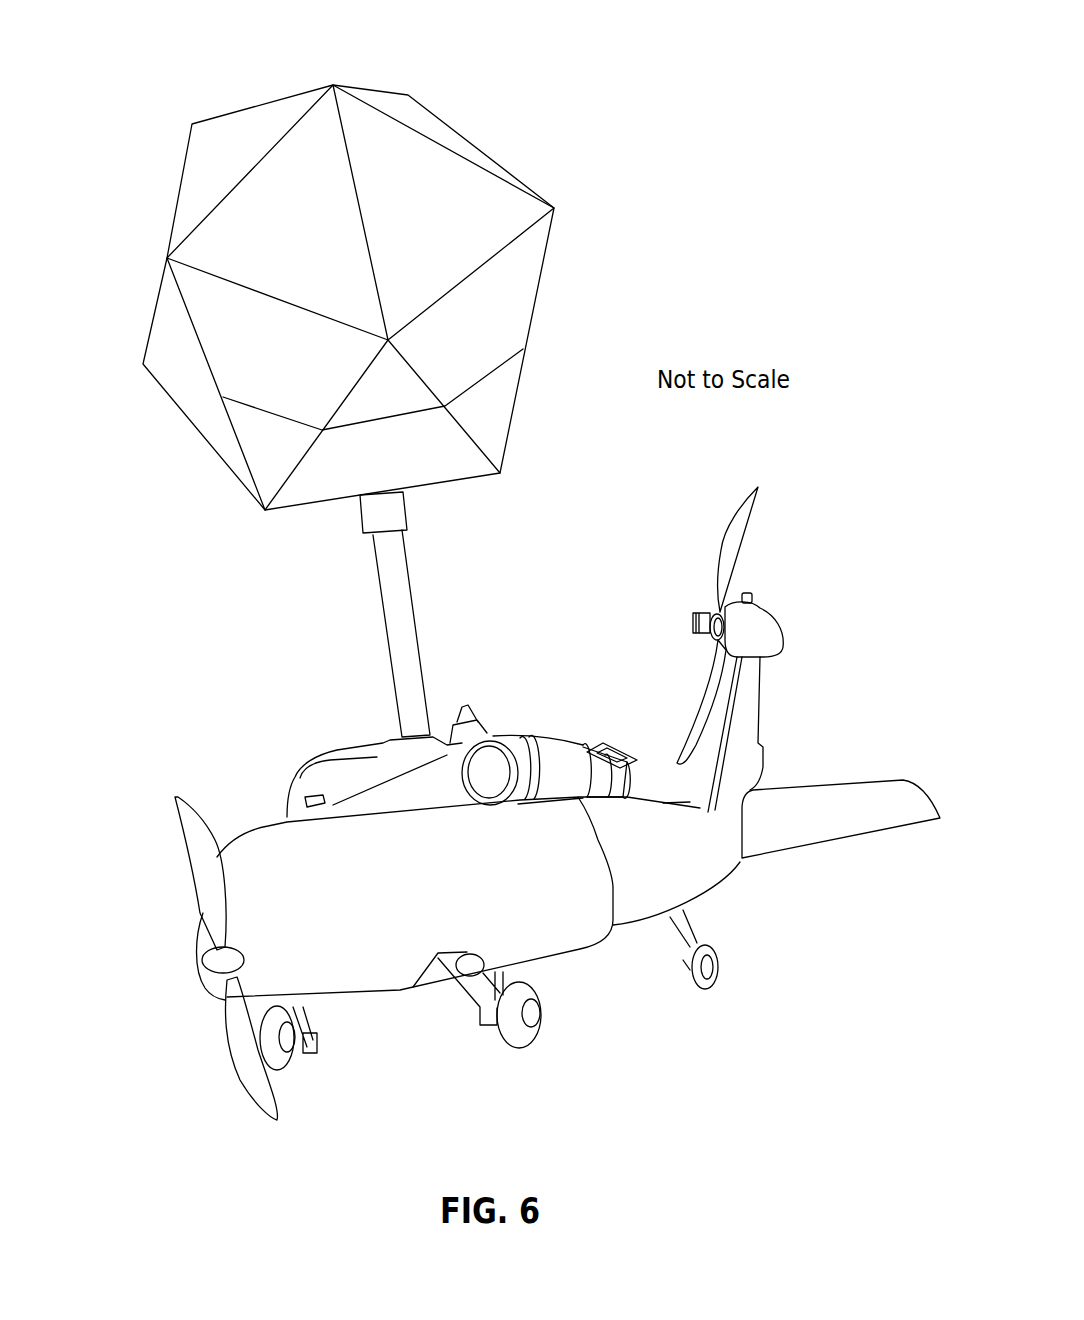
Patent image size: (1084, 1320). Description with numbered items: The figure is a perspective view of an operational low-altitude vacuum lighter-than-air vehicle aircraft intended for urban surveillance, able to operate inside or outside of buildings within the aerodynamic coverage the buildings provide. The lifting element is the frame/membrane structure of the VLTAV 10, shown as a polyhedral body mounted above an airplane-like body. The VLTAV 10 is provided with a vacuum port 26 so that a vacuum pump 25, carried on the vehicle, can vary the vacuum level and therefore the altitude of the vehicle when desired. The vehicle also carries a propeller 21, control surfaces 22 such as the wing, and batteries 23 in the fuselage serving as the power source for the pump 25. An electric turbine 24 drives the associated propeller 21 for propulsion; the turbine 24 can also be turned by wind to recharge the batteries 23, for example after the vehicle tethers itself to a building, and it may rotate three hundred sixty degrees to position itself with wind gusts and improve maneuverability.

The VLTAV 10 is at (447, 212).
The propeller 21 is at (203, 863).
The control surfaces 22 is at (827, 808).
The batteries 23 is at (540, 912).
The electric turbine 24 is at (549, 752).
The vacuum pump 25 is at (362, 773).
The vacuum port 26 is at (395, 518).